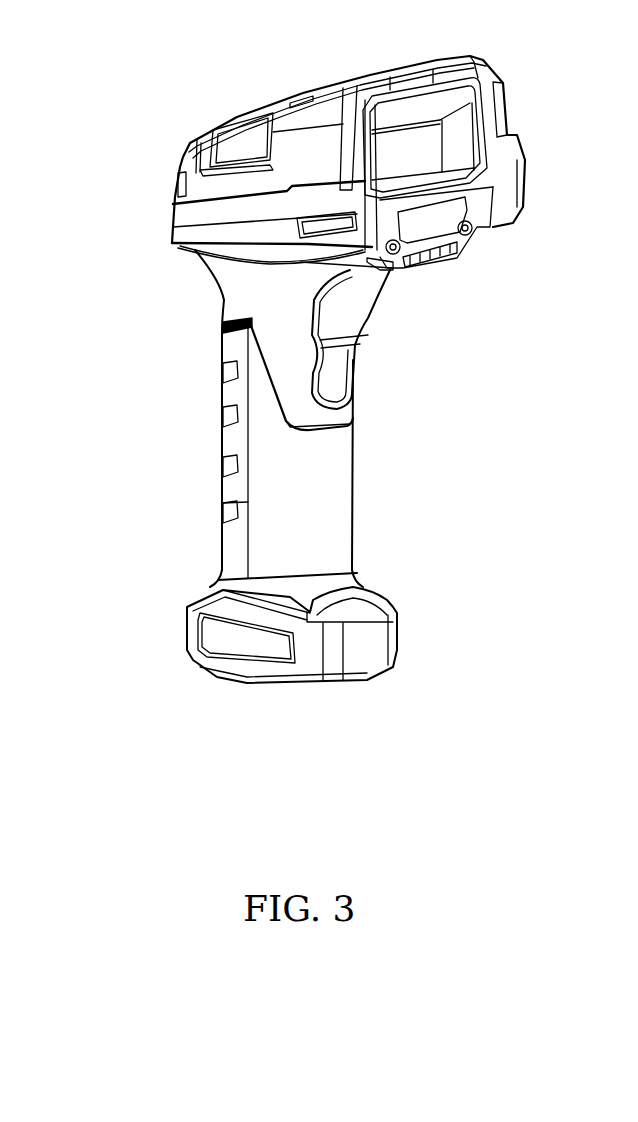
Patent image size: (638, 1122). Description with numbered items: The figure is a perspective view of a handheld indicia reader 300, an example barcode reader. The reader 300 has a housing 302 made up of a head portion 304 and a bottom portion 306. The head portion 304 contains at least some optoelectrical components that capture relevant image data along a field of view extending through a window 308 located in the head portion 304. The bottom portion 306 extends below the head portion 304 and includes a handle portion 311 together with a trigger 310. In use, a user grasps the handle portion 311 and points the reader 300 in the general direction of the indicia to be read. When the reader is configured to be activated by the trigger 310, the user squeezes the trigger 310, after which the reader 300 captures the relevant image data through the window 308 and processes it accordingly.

The indicia reader 300 is at (152, 97).
The housing 302 is at (180, 233).
The head portion 304 is at (160, 213).
The bottom portion 306 is at (197, 498).
The window 308 is at (417, 147).
The trigger 310 is at (347, 313).
The handle portion 311 is at (333, 496).